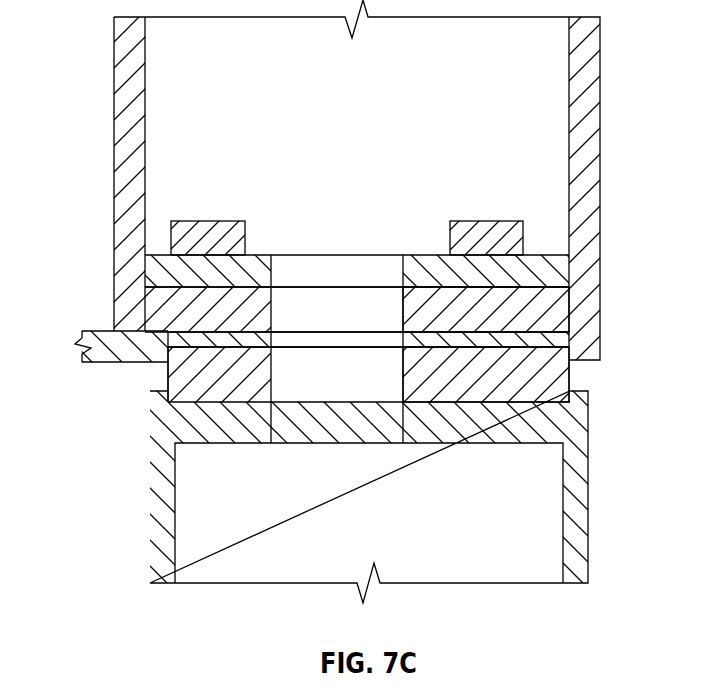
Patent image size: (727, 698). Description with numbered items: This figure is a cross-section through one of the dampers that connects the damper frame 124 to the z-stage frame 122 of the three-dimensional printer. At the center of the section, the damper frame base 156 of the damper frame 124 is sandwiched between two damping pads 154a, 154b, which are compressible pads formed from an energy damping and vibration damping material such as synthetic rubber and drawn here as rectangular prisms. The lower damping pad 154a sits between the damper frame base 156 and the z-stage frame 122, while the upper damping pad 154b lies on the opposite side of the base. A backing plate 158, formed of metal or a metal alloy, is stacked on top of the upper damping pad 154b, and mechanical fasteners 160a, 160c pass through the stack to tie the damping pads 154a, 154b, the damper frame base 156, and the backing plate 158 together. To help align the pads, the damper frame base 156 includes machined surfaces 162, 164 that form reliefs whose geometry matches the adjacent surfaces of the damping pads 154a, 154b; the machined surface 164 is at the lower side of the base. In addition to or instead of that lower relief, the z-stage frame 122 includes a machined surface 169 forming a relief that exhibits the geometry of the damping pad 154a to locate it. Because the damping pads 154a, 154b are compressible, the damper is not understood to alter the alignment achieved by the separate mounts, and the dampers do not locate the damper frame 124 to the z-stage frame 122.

The z-stage frame 122 is at (150, 507).
The damper frame 124 is at (114, 86).
The damping pad 154a is at (168, 372).
The damping pad 154b is at (160, 322).
The damper frame base 156 is at (105, 350).
The backing plate 158 is at (160, 262).
The mechanical fastener 160a is at (479, 221).
The mechanical fastener 160c is at (207, 221).
The machined surface 162 is at (555, 347).
The machined surface 164 is at (558, 322).
The machined surface 169 is at (510, 388).